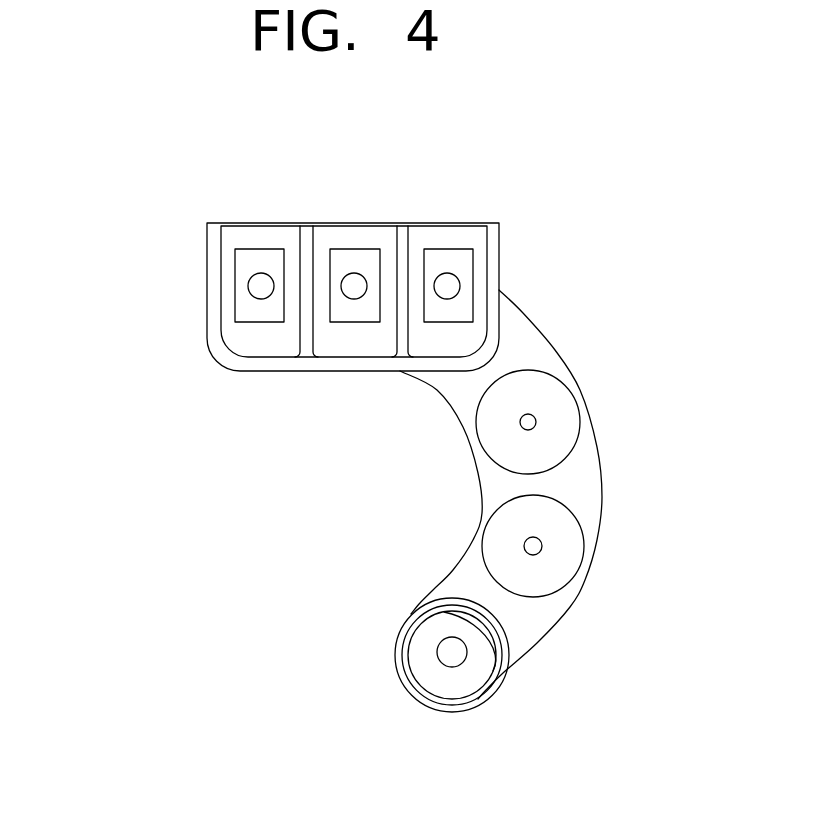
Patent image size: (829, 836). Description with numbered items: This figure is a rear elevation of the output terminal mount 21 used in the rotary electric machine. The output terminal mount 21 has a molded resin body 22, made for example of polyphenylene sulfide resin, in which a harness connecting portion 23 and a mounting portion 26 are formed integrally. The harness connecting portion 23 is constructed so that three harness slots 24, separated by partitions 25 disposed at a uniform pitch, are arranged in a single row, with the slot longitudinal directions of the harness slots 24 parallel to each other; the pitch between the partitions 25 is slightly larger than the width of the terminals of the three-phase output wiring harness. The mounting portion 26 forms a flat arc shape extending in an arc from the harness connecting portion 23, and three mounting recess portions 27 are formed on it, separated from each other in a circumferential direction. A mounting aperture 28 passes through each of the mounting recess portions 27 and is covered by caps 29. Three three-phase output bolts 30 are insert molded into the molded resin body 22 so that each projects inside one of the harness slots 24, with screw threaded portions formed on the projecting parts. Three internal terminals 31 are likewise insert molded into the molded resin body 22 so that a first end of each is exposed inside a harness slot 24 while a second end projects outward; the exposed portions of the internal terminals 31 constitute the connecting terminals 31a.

The output terminal mount 21 is at (70, 112).
The molded resin body 22 is at (712, 230).
The harness connecting portion 23 is at (500, 272).
The harness slots 24 is at (448, 233).
The partitions 25 is at (402, 228).
The mounting portion 26 is at (548, 338).
The mounting recess portions 27 is at (408, 646).
The mounting aperture 28 is at (447, 653).
The caps 29 is at (563, 555).
The three-phase output bolts 30 is at (450, 283).
The internal terminals 31 is at (249, 307).
The connecting terminals 31a is at (243, 263).